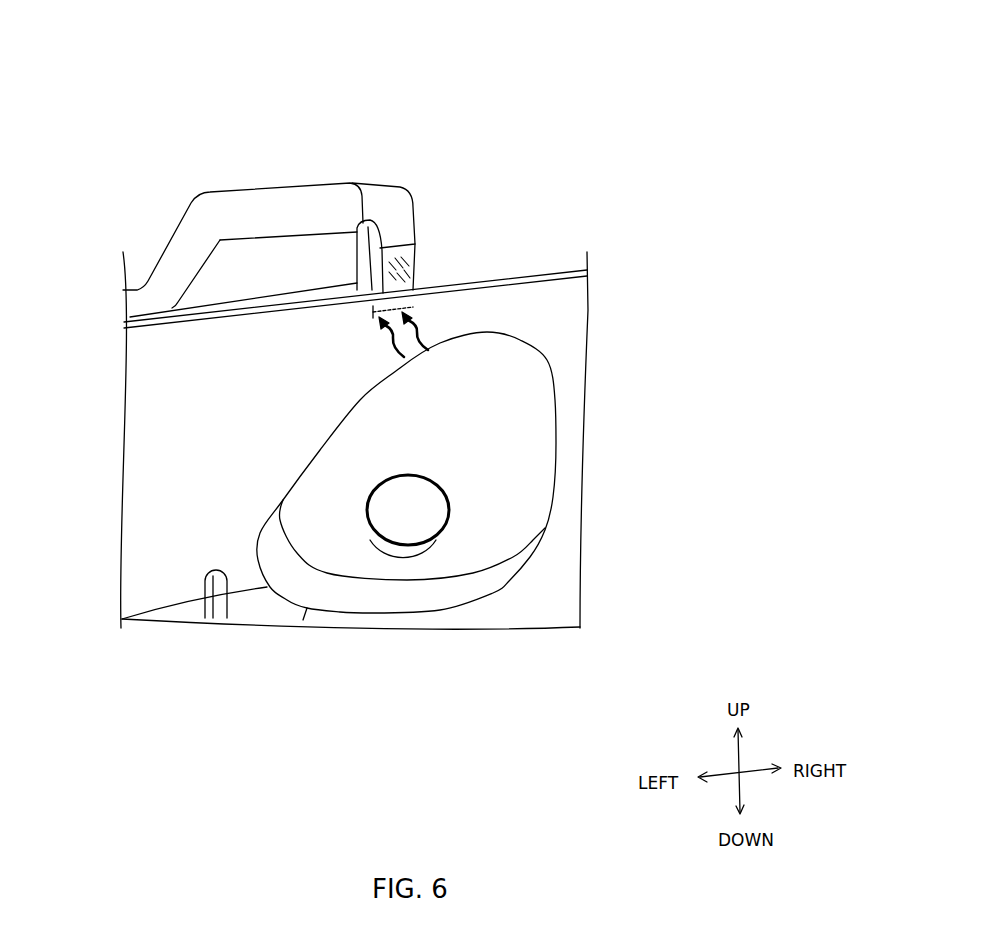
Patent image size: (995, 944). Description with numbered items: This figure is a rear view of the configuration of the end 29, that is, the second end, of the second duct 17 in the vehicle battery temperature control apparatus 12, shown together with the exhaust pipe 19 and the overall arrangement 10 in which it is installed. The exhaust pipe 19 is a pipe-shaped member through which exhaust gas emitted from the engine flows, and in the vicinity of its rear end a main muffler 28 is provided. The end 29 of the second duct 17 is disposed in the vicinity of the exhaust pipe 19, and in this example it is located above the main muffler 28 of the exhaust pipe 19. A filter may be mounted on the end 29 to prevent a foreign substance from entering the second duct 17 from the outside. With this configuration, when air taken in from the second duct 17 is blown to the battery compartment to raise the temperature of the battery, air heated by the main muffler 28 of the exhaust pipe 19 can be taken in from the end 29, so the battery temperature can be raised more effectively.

The vehicle interior structure 10 is at (420, 70).
The vehicle battery temperature control apparatus 12 is at (472, 117).
The second duct 17 is at (387, 188).
The exhaust pipe 19 is at (446, 492).
The main muffler 28 is at (548, 372).
The end 29 is at (427, 300).